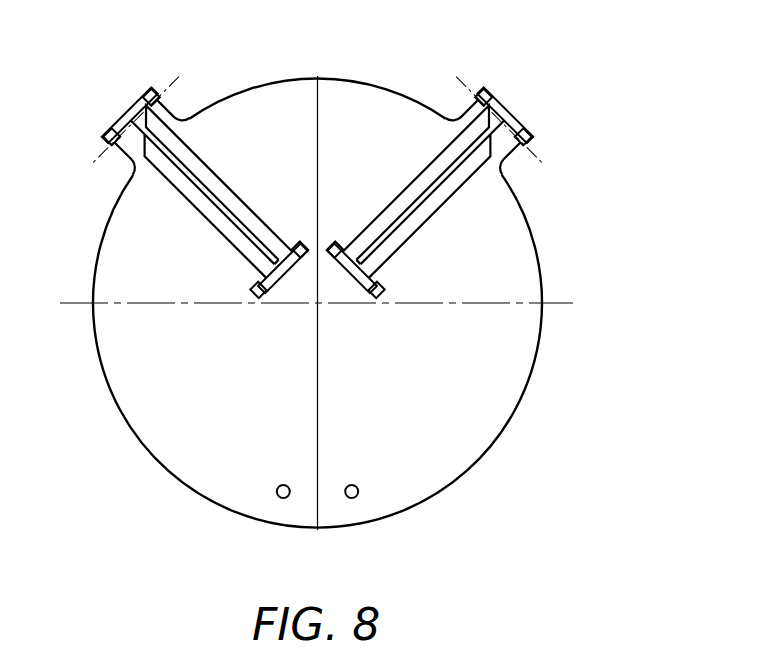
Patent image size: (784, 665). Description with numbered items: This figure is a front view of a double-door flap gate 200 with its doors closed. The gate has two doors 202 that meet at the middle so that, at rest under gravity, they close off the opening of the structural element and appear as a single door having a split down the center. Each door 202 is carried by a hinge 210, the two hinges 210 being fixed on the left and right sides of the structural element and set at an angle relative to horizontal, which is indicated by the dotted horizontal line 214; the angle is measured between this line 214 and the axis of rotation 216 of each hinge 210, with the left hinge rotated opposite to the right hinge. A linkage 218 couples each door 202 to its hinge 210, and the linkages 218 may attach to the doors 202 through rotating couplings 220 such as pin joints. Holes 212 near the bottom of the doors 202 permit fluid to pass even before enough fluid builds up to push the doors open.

The double-door flap gate 200 is at (612, 164).
The door 202 is at (192, 472).
The hinge 210 is at (104, 136).
The hole 212 is at (280, 499).
The horizontal line 214 is at (562, 303).
The axis of rotation 216 is at (172, 84).
The linkage 218 is at (210, 173).
The rotating coupling 220 is at (262, 287).